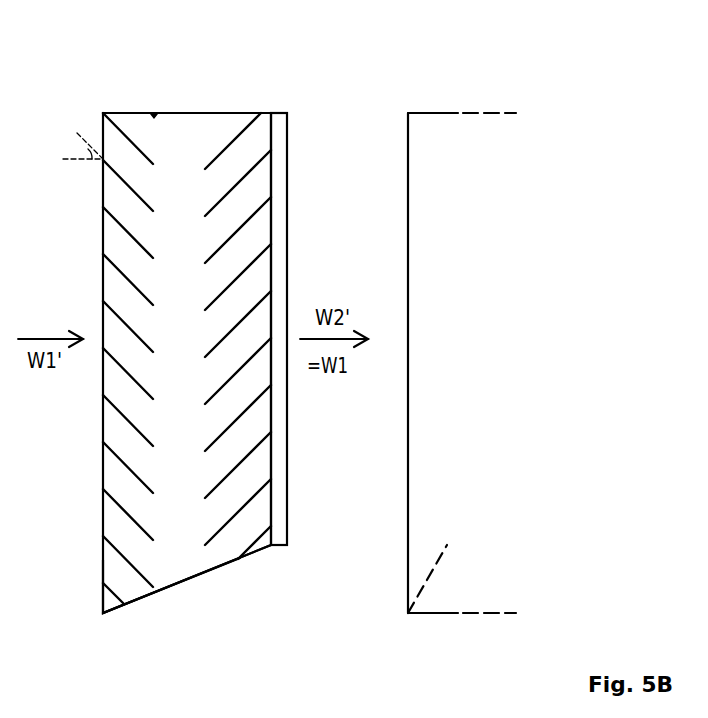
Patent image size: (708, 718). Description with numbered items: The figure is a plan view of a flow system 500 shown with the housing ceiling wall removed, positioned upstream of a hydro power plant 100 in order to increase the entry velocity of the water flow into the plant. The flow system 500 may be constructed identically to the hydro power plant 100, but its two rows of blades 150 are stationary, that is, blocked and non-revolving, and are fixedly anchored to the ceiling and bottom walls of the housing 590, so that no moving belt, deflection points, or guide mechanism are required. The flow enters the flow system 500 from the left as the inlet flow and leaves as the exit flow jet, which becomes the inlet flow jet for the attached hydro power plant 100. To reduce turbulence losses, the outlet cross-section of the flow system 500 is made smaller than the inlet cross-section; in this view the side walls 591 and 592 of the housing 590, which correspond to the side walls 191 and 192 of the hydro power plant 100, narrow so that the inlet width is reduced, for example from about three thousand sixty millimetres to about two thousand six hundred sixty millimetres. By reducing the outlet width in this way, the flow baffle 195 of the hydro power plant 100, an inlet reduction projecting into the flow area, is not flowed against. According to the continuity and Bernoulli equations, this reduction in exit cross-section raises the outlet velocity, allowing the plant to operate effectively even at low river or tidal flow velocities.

The flow system 500 is at (158, 58).
The blades 150 is at (220, 148).
The side wall 591 is at (207, 116).
The side wall 592 is at (127, 604).
The housing 590 is at (218, 585).
The hydro power plant 100 is at (458, 58).
The side wall 191 is at (442, 112).
The side wall 192 is at (453, 617).
The flow baffle 195 is at (427, 598).